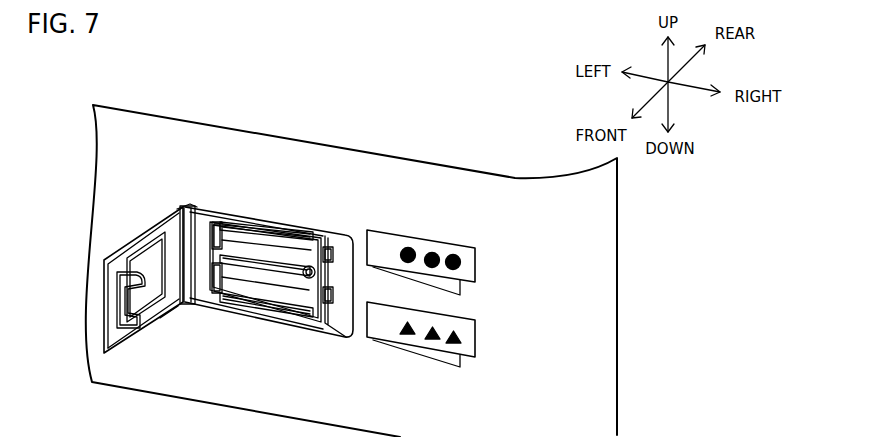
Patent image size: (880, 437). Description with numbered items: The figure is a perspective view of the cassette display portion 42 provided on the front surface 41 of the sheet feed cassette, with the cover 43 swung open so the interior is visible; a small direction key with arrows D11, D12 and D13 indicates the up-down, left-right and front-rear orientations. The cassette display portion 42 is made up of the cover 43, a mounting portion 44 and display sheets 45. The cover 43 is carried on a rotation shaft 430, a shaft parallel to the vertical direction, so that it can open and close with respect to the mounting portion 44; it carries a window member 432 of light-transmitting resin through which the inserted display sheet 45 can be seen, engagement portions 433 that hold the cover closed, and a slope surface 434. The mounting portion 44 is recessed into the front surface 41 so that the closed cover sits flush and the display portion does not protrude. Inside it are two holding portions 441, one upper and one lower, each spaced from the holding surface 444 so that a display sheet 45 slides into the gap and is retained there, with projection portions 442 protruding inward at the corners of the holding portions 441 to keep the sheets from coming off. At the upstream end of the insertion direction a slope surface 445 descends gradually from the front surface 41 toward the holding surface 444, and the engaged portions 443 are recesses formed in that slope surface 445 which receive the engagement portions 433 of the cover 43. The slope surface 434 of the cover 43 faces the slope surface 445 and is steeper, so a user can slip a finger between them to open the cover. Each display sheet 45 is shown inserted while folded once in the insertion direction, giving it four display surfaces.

The front surface 41 is at (441, 419).
The cassette display portion 42 is at (141, 178).
The cover 43 is at (105, 256).
The rotation shaft 430 is at (196, 209).
The window member 432 is at (161, 318).
The engagement portions 433 is at (148, 252).
The slope surface 434 is at (103, 312).
The mounting portion 44 is at (304, 216).
The holding portions 441 is at (241, 221).
The projection portions 442 is at (210, 314).
The engaged portions 443 is at (331, 234).
The holding surface 444 is at (269, 238).
The slope surface 445 is at (343, 316).
The display sheet 45 is at (479, 266).
The front-rear direction D11 is at (673, 110).
The up-down direction D12 is at (646, 72).
The left-right direction D13 is at (688, 67).